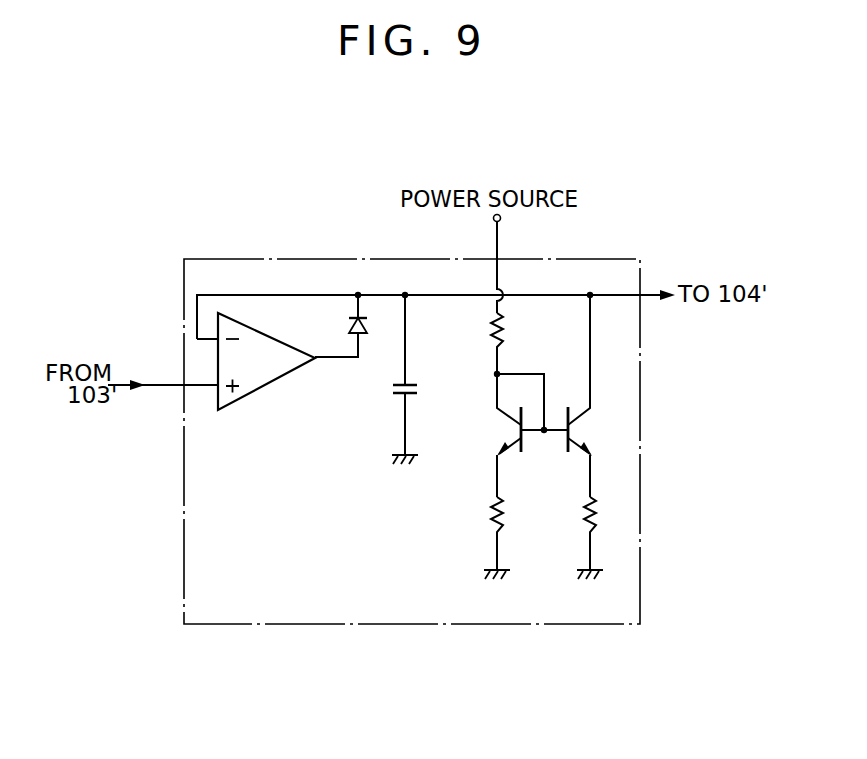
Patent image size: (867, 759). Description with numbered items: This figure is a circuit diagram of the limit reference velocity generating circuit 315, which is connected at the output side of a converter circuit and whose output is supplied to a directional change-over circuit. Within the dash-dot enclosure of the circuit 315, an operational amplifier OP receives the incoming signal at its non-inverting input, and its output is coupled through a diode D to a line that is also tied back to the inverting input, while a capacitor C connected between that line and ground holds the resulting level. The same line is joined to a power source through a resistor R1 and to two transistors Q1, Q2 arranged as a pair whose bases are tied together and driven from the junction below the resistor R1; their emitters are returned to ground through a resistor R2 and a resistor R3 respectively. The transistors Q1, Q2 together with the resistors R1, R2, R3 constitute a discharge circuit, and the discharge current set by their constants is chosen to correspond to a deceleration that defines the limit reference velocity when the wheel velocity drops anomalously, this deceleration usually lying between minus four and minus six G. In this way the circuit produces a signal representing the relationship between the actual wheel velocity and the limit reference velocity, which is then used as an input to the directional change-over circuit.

The limit reference velocity generating circuit 315 is at (252, 259).
The operational amplifier OP is at (279, 374).
The diode D is at (348, 325).
The capacitor C is at (392, 386).
The resistor R1 is at (504, 338).
The resistor R2 is at (504, 525).
The resistor R3 is at (597, 527).
The transistor Q1 is at (526, 441).
The transistor Q2 is at (563, 441).